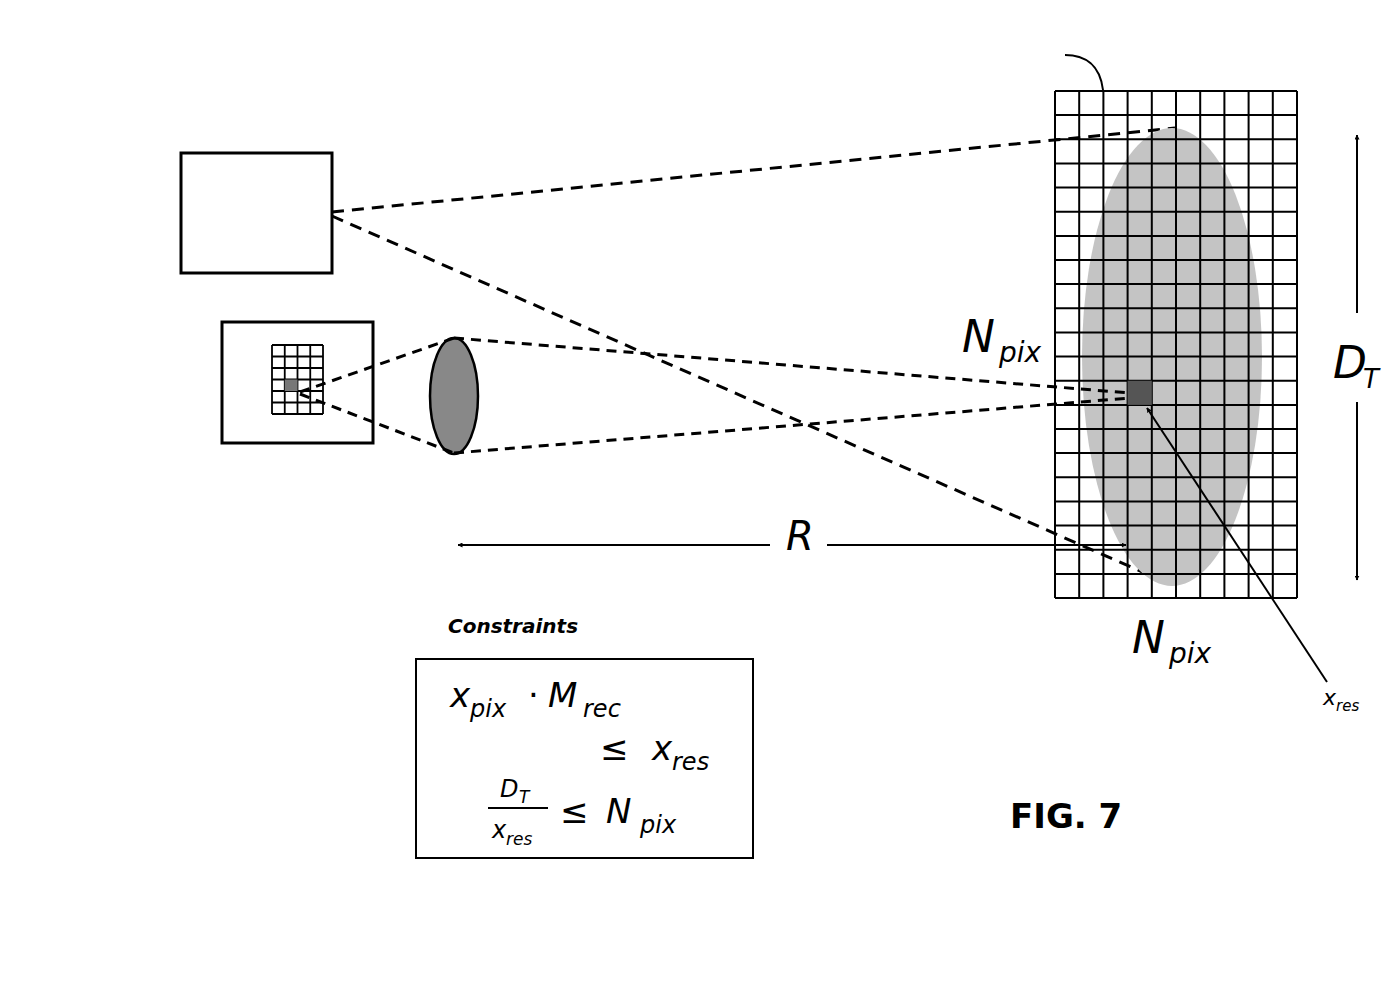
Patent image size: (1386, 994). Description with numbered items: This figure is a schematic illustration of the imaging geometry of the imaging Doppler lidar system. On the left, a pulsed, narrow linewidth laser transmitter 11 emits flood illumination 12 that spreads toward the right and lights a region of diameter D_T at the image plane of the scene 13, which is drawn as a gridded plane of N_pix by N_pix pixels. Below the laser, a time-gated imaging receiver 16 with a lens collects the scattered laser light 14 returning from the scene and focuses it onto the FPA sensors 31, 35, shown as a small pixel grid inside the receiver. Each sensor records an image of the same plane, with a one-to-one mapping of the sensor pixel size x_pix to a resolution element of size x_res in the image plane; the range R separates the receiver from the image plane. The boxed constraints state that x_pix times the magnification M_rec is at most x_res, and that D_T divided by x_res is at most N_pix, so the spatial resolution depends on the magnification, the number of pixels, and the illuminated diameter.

The laser transmitter 11 is at (260, 152).
The flood illumination 12 is at (730, 172).
The scene 13 is at (1186, 68).
The scattered laser light 14 is at (670, 438).
The time-gated imaging receiver 16 is at (222, 410).
The FPA sensor 31 is at (272, 355).
The FPA sensor 35 is at (223, 356).